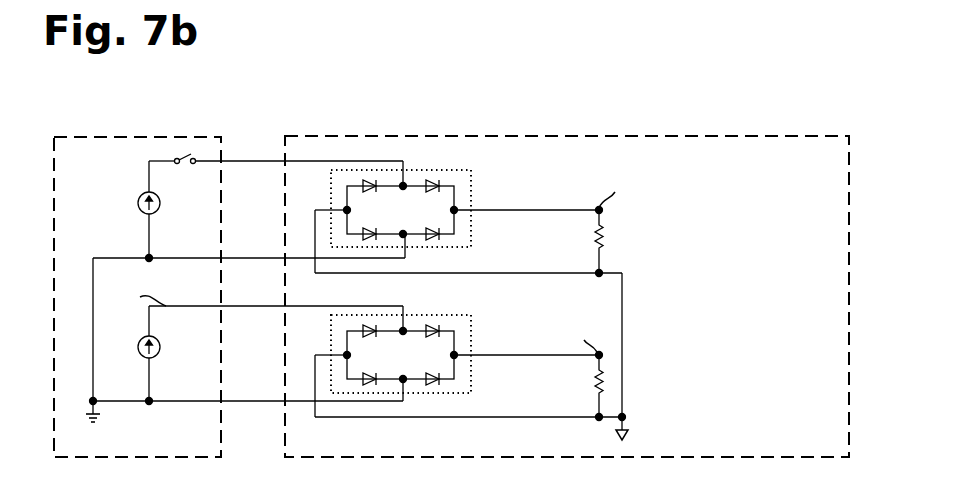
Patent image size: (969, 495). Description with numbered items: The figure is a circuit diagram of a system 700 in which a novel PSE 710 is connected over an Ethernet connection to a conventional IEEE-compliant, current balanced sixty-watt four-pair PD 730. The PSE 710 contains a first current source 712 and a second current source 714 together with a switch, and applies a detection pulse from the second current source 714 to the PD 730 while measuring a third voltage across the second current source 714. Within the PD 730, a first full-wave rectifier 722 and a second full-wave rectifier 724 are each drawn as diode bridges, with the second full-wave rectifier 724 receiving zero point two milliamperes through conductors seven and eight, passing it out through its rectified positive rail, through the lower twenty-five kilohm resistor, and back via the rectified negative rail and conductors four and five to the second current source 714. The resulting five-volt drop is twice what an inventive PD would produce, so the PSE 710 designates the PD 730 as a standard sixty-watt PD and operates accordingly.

The system 700 is at (652, 127).
The PSE 710 is at (221, 137).
The second current source 712 is at (137, 204).
The second current source 714 is at (160, 344).
The full-wave rectifier 722 is at (470, 170).
The second full-wave rectifier 724 is at (470, 315).
The PD 730 is at (445, 137).